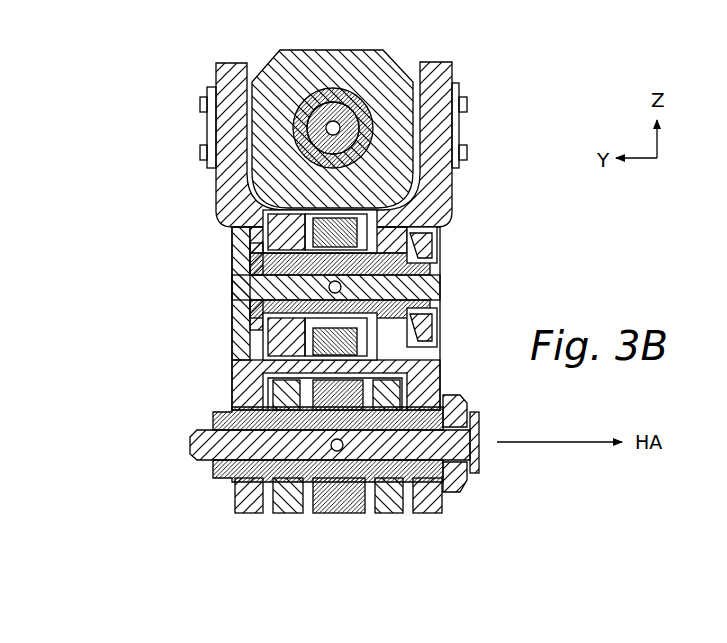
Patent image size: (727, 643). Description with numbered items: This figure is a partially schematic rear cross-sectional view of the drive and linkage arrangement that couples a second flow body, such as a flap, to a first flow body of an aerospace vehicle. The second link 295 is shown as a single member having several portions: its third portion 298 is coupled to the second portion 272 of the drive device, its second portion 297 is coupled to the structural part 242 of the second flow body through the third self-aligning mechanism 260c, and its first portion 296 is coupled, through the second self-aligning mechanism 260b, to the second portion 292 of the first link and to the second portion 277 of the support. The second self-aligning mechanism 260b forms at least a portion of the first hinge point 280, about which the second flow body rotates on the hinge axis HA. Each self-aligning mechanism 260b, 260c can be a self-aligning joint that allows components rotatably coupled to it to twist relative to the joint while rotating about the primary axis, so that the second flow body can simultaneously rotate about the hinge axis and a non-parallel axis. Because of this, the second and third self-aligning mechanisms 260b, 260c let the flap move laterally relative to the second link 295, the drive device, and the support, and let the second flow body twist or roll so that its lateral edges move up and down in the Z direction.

The second portion of the drive device 272 is at (338, 50).
The third portion of the second link 298 is at (215, 68).
The second portion of the second link 297 is at (222, 216).
The structural part of the second flow body 242 is at (323, 328).
The third self-aligning mechanism 260c is at (470, 241).
The second self-aligning mechanism 260b is at (505, 453).
The first portion of the second link 296 is at (232, 382).
The second link 295 is at (115, 373).
The first hinge point 280 is at (163, 517).
The second portion of the support 277 is at (290, 513).
The second portion of the first link 292 is at (347, 513).